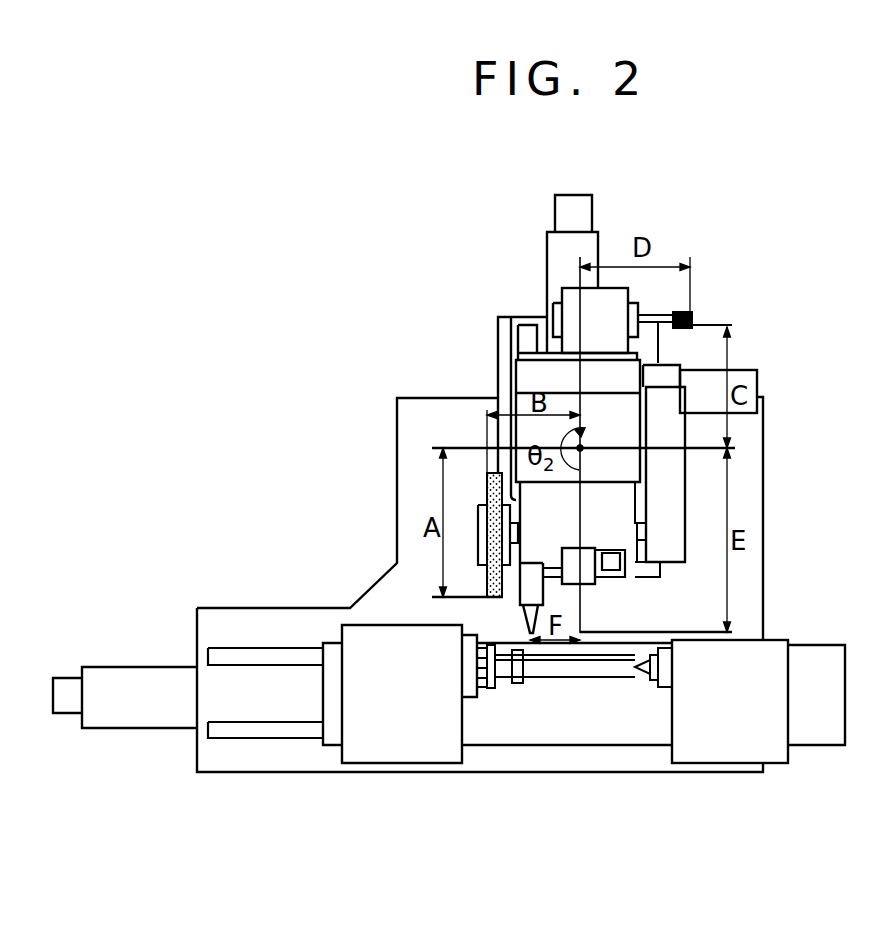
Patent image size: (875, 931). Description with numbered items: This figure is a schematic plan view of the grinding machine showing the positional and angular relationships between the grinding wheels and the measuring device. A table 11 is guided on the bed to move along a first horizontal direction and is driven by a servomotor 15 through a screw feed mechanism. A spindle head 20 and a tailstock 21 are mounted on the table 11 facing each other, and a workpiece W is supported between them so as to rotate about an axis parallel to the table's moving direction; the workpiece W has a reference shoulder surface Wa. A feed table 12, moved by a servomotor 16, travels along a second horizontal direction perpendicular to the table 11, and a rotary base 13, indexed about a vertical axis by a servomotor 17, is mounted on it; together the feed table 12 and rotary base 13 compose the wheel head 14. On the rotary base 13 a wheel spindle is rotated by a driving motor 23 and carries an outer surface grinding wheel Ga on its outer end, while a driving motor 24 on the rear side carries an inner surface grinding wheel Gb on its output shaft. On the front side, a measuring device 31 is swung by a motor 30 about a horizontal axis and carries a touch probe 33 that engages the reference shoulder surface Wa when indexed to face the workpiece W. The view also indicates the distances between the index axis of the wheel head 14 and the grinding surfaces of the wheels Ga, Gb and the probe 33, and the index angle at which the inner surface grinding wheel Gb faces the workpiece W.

The table 11 is at (823, 732).
The feed table 12 is at (643, 362).
The rotary base 13 is at (622, 540).
The wheel head 14 is at (497, 380).
The servomotor 15 is at (145, 710).
The servomotor 16 is at (597, 235).
The servomotor 17 is at (738, 386).
The spindle head 20 is at (417, 747).
The tailstock 21 is at (735, 752).
The driving motor 23 is at (563, 397).
The driving motor 24 is at (620, 303).
The motor 30 is at (612, 565).
The measuring device 31 is at (540, 598).
The touch probe 33 is at (525, 620).
The outer surface grinding wheel Ga is at (484, 556).
The inner surface grinding wheel Gb is at (692, 312).
The workpiece W is at (577, 670).
The reference shoulder surface Wa is at (533, 683).